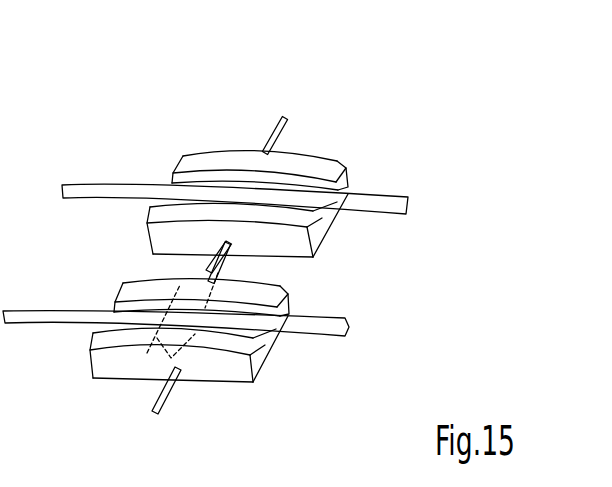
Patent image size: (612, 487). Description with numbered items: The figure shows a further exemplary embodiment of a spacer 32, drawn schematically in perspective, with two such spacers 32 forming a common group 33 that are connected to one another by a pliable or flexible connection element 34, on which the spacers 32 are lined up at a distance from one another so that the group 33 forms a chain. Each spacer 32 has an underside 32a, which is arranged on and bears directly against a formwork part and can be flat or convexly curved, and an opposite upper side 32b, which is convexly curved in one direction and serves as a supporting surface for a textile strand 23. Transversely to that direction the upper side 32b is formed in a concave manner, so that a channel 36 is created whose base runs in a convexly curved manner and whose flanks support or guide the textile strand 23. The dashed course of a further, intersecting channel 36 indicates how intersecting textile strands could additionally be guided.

The textile strand 23 is at (385, 196).
The spacer 32 is at (337, 157).
The underside 32a is at (337, 237).
The upper side 32b is at (243, 168).
The group 33 is at (301, 92).
The connection element 34 is at (284, 134).
The channel 36 is at (190, 173).